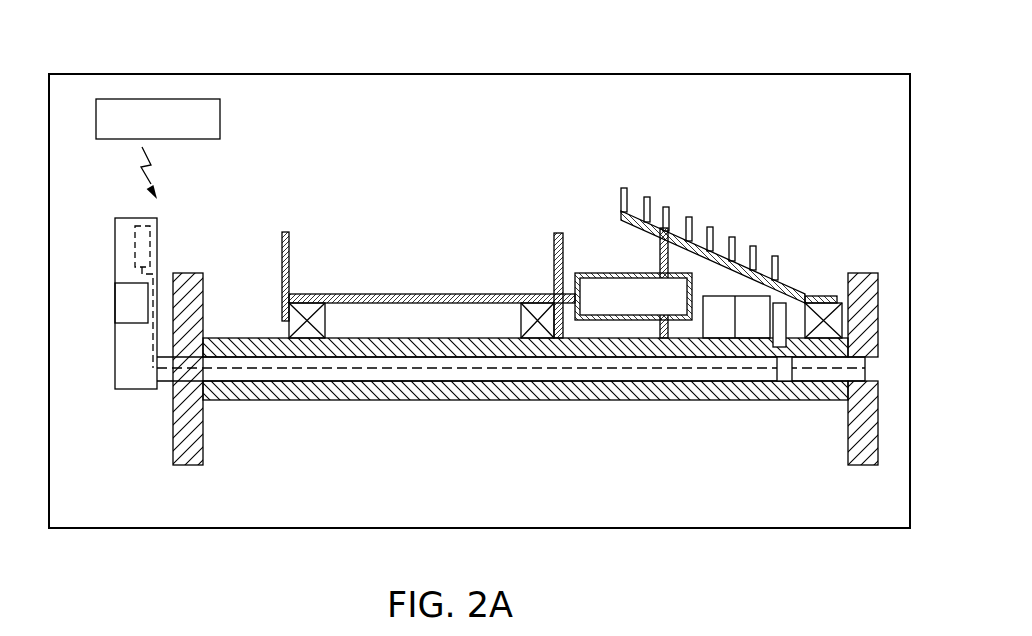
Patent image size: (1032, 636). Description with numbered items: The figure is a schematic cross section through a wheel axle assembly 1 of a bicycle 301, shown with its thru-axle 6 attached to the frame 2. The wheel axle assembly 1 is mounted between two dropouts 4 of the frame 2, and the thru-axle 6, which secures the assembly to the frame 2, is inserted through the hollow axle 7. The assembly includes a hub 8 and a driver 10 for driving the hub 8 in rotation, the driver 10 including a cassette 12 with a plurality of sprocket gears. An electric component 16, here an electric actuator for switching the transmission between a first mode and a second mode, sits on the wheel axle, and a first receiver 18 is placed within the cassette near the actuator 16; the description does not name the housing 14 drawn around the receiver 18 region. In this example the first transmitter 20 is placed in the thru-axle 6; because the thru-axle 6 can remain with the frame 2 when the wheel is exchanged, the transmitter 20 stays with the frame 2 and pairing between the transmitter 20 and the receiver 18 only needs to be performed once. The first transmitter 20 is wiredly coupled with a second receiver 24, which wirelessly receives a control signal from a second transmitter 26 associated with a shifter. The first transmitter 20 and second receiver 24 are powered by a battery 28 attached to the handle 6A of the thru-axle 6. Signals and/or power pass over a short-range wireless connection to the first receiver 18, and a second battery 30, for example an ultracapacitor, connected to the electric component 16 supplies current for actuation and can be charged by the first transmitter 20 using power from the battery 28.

The bicycle 301 is at (764, 40).
The wheel axle assembly 1 is at (750, 175).
The frame 2 is at (528, 345).
The dropouts 4 is at (203, 433).
The thru-axle 6 is at (350, 360).
The handle 6A is at (139, 341).
The hollow axle 7 is at (437, 400).
The hub 8 is at (433, 292).
The driver 10 is at (808, 300).
The cassette 12 is at (699, 238).
The housing 14 is at (590, 272).
The electric component 16 is at (753, 305).
The first receiver 18 is at (782, 303).
The first transmitter 20 is at (785, 385).
The second receiver 24 is at (150, 247).
The second transmitter 26 is at (221, 117).
The battery 28 is at (137, 305).
The second battery 30 is at (712, 318).